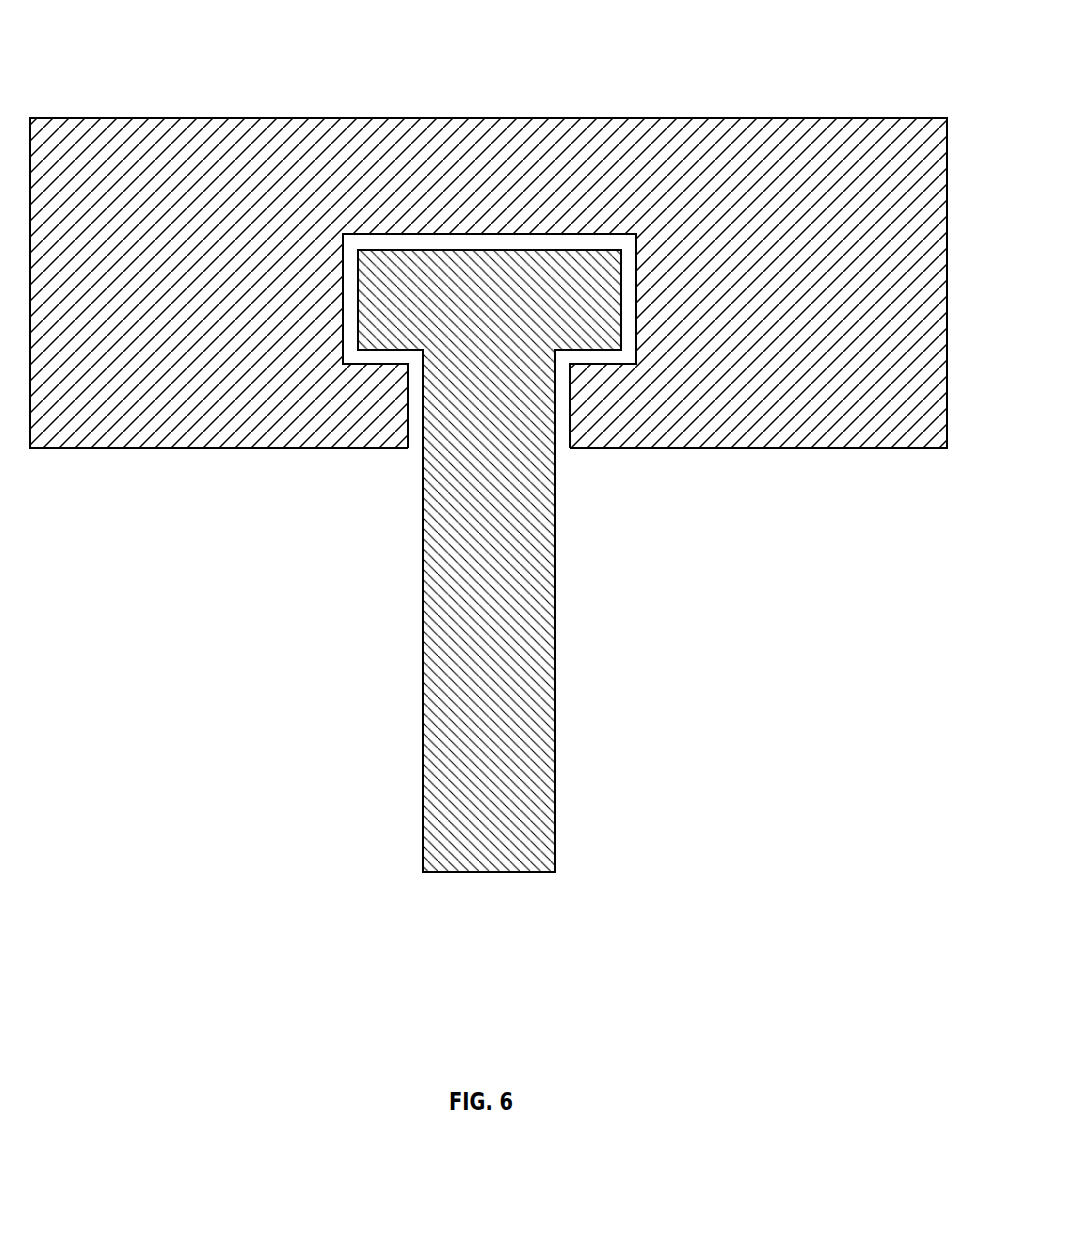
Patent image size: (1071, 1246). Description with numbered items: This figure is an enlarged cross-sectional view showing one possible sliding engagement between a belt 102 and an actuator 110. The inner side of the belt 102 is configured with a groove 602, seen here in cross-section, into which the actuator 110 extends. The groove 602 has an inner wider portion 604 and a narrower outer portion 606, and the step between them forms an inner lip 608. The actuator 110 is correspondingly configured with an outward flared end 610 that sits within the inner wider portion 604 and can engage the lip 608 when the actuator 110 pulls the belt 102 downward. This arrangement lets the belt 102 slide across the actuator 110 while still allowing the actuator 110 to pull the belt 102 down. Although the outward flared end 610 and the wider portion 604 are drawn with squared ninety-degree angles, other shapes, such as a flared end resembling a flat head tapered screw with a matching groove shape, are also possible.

The belt 102 is at (533, 118).
The actuator 110 is at (555, 633).
The groove 602 is at (562, 438).
The inner wider portion 604 is at (638, 290).
The narrower outer portion 606 is at (408, 415).
The inner lip 608 is at (383, 363).
The outward flared end 610 is at (357, 324).